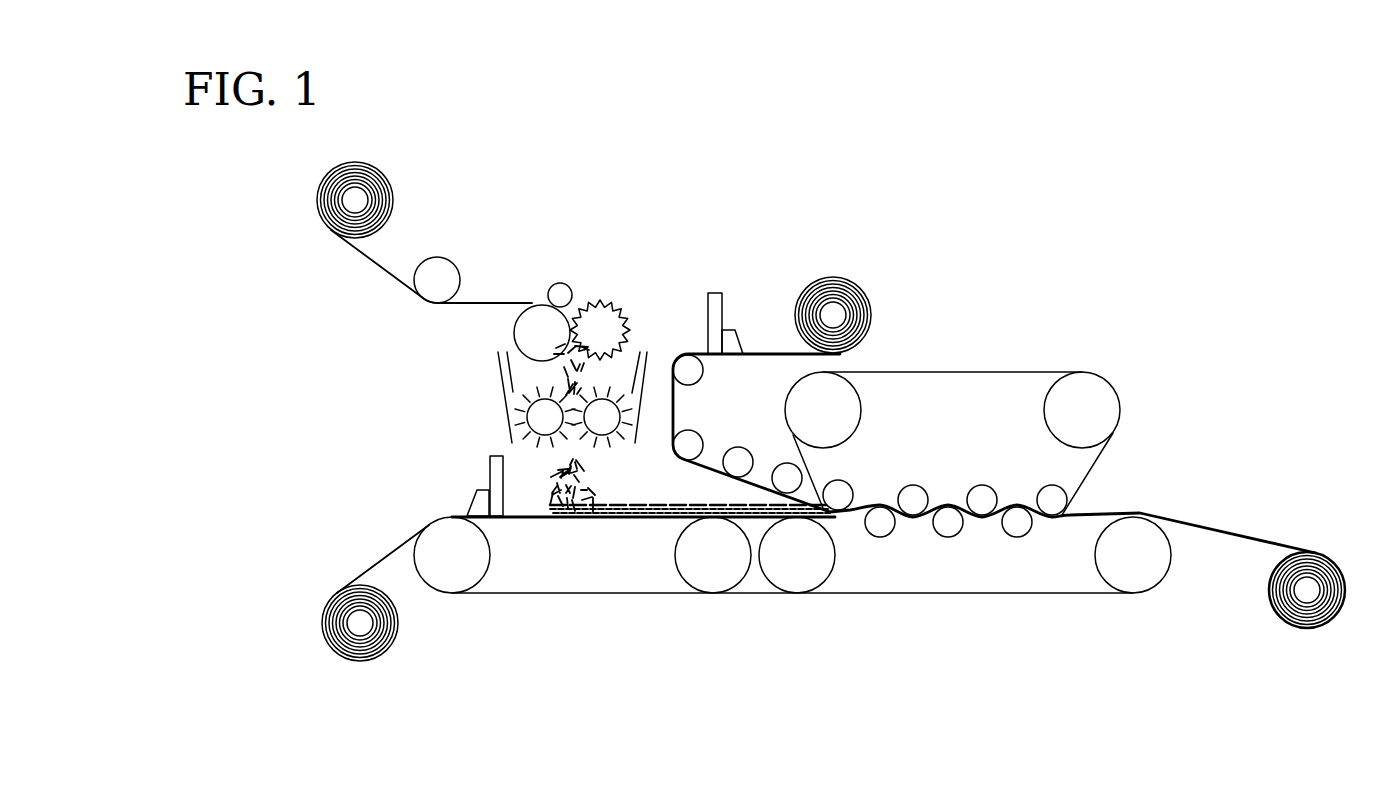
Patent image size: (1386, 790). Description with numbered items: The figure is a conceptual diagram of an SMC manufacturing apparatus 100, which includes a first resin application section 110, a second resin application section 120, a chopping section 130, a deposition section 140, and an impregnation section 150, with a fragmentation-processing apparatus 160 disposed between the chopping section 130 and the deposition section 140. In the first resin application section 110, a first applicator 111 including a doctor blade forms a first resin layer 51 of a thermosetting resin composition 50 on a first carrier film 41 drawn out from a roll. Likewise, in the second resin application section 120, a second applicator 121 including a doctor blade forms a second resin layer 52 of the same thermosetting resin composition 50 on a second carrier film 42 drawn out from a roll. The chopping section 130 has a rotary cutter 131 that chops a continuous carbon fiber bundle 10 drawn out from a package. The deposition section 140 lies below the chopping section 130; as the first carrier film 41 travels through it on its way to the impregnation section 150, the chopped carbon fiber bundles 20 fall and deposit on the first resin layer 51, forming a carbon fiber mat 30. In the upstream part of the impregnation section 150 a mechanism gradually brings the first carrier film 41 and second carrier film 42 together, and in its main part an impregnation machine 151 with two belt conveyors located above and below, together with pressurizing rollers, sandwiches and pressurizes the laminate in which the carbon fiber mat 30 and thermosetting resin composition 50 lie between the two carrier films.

The SMC manufacturing apparatus 100 is at (1108, 168).
The continuous carbon fiber bundle 10 is at (380, 268).
The chopping section 130 is at (294, 163).
The rotary cutter 131 is at (579, 270).
The fragmentation-processing apparatus 160 is at (473, 396).
The chopped carbon fiber bundles 20 is at (590, 481).
The first resin application section 110 is at (294, 452).
The first applicator 111 is at (447, 463).
The first carrier film 41 is at (380, 560).
The thermosetting resin composition 50 is at (480, 505).
The first resin layer 51 is at (526, 512).
The deposition section 140 is at (520, 534).
The carbon fiber mat 30 is at (688, 503).
The second resin application section 120 is at (675, 199).
The second applicator 121 is at (692, 307).
The second carrier film 42 is at (767, 353).
The second resin layer 52 is at (660, 400).
The impregnation machine 151 is at (960, 350).
The impregnation section 150 is at (797, 627).